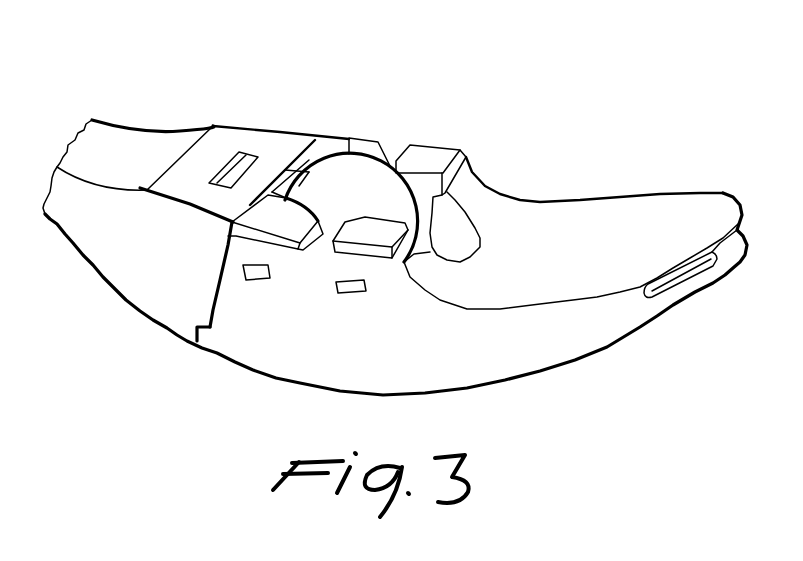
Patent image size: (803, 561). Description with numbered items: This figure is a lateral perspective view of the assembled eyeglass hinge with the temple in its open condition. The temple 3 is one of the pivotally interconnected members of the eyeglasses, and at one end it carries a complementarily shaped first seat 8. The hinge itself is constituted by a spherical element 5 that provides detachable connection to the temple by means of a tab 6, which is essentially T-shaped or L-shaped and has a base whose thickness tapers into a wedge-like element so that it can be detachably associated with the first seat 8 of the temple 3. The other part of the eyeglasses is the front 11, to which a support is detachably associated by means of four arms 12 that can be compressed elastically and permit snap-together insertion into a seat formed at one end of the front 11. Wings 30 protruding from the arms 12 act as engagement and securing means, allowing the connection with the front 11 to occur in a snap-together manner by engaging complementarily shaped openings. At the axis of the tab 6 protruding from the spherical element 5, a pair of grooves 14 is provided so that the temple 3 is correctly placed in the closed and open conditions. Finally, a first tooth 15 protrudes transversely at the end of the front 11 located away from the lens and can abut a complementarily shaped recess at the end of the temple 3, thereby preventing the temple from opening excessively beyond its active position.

The temple 3 is at (180, 128).
The spherical element 5 is at (354, 140).
The tab 6 is at (293, 182).
The first seat 8 is at (256, 159).
The front 11 is at (601, 172).
The arms 12 is at (376, 140).
The grooves 14 is at (454, 246).
The first tooth 15 is at (187, 341).
The wings 30 is at (242, 268).